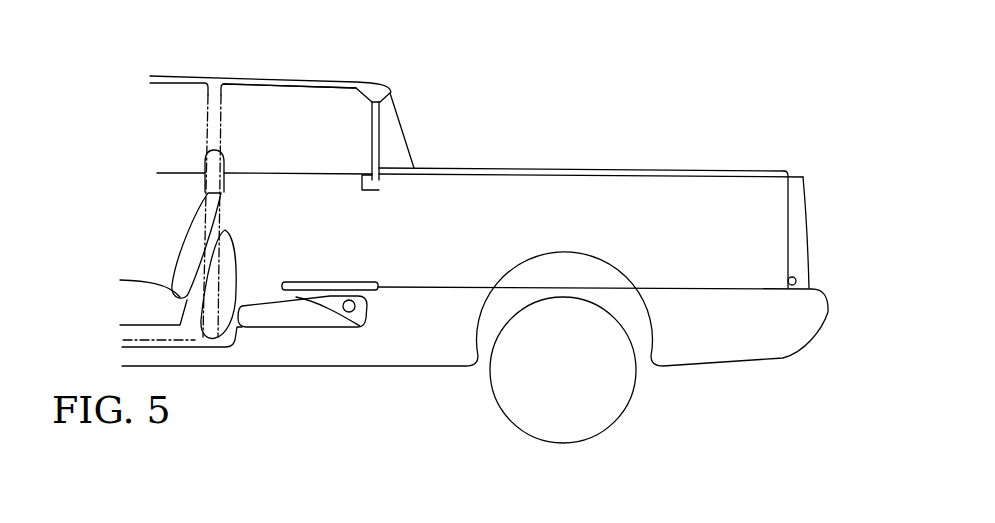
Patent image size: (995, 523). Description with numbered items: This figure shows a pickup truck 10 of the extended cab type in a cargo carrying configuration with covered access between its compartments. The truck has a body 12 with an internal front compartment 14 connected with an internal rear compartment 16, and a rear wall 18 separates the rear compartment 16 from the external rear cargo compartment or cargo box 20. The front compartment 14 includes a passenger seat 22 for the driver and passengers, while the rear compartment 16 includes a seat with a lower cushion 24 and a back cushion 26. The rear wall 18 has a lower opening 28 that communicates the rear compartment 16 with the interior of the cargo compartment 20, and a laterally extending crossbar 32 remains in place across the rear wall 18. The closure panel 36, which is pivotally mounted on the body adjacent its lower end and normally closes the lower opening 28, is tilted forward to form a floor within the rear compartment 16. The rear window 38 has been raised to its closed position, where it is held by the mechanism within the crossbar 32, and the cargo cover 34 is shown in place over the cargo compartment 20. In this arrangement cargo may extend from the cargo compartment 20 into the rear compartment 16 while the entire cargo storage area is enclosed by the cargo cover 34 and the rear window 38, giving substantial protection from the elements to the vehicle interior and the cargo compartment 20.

The pickup truck 10 is at (110, 154).
The body 12 is at (222, 74).
The internal front compartment 14 is at (187, 97).
The internal rear compartment 16 is at (305, 98).
The rear wall 18 is at (381, 86).
The cargo compartment 20 is at (552, 192).
The passenger seat 22 is at (187, 227).
The lower cushion 24 is at (233, 247).
The back cushion 26 is at (305, 295).
The lower opening 28 is at (372, 254).
The crossbar 32 is at (380, 182).
The cargo cover 34 is at (475, 167).
The closure panel 36 is at (318, 282).
The rear window 38 is at (380, 139).